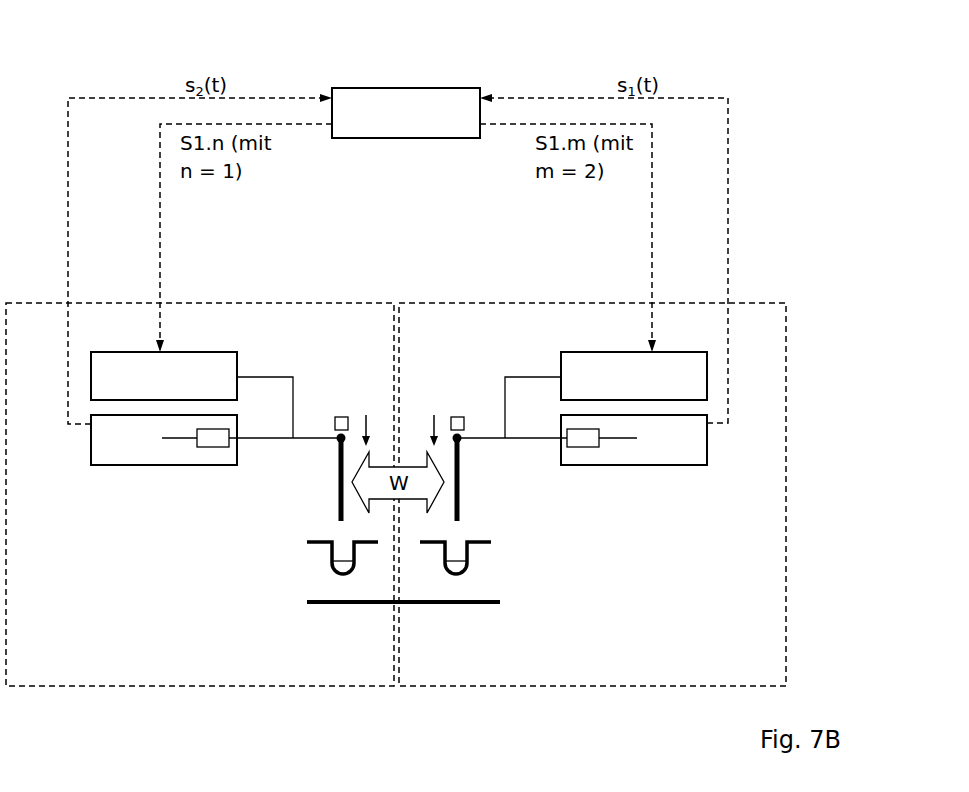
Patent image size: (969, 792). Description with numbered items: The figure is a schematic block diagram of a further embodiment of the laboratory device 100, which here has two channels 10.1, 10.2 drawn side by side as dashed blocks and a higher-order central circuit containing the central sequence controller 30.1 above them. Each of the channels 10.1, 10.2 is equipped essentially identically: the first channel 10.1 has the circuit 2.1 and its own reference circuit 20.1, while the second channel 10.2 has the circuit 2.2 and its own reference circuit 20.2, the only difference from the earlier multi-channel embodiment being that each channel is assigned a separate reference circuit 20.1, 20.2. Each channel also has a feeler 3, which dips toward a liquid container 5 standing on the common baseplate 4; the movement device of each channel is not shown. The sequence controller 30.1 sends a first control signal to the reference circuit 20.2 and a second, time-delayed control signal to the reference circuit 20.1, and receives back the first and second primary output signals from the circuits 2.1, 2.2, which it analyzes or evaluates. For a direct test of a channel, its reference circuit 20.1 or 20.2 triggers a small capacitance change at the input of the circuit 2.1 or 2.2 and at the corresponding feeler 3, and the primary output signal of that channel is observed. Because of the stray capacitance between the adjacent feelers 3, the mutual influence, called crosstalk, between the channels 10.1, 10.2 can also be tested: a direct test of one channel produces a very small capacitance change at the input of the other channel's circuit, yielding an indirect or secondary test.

The laboratory device 100 is at (773, 29).
The first channel 10.1 is at (563, 673).
The second channel 10.2 is at (162, 673).
The central sequence controller 30.1 is at (469, 117).
The reference circuit 20.1 is at (620, 379).
The reference circuit 20.2 is at (150, 379).
The circuit 2.1 is at (697, 442).
The circuit 2.2 is at (135, 442).
The feeler 3 is at (339, 469).
The liquid container 5 is at (330, 548).
The baseplate 4 is at (307, 602).